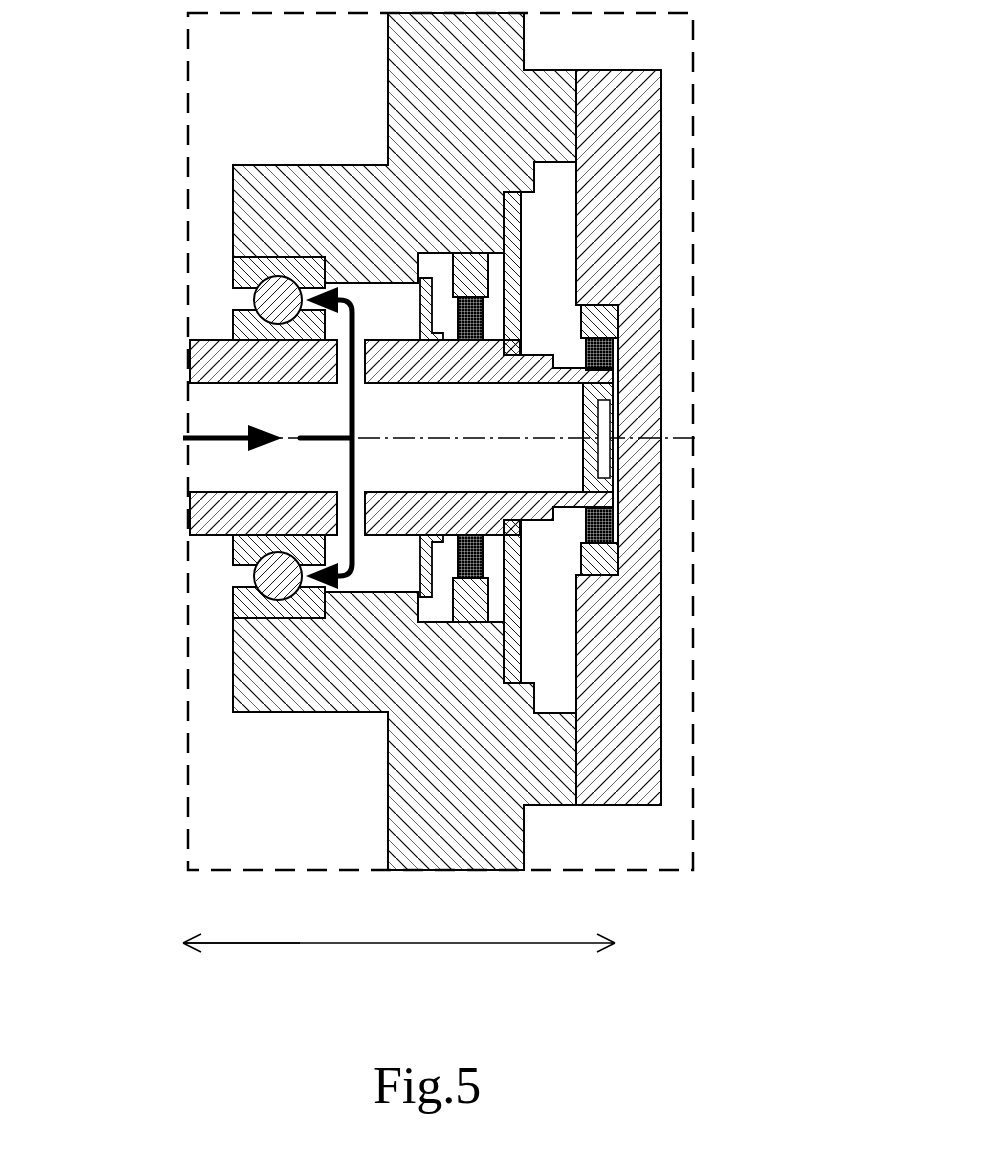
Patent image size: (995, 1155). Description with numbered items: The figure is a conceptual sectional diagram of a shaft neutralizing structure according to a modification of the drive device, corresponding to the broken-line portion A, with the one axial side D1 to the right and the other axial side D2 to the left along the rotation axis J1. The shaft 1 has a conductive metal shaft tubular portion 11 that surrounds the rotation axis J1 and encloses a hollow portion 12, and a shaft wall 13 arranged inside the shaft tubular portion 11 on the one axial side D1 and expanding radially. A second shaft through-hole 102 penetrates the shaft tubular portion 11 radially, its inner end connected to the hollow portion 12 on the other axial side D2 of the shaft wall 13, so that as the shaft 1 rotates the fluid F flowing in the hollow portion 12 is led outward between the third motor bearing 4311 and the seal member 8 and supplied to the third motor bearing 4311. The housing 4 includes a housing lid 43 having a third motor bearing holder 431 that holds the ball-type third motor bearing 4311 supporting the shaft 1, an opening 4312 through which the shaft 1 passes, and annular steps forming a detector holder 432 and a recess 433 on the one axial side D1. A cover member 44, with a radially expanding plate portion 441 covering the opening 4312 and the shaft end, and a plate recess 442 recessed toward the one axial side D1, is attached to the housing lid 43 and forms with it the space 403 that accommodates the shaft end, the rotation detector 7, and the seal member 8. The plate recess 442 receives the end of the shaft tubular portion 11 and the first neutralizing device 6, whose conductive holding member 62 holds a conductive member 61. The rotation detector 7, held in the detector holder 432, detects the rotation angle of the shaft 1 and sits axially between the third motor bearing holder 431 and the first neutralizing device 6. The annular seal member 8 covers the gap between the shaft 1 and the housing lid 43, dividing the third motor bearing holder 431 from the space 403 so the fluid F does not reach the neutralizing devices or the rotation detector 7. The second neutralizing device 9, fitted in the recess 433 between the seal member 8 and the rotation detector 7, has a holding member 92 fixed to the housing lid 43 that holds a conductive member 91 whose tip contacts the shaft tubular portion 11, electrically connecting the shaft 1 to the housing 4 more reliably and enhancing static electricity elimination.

The portion A is at (188, 62).
The rotation axis J1 is at (183, 437).
The fluid F is at (220, 437).
The one axial side D1 is at (435, 947).
The other axial side D2 is at (204, 947).
The shaft 1 is at (429, 444).
The shaft tubular portion 11 is at (218, 512).
The hollow portion 12 is at (204, 482).
The shaft wall 13 is at (622, 420).
The second shaft through-hole 102 is at (318, 372).
The housing 4 is at (447, 441).
The housing lid 43 is at (427, 441).
The third motor bearing holder 431 is at (250, 207).
The third motor bearing 4311 is at (250, 272).
The opening 4312 is at (369, 270).
The detector holder 432 is at (517, 177).
The recess 433 is at (460, 240).
The space 403 is at (570, 657).
The cover member 44 is at (710, 437).
The plate portion 441 is at (617, 742).
The plate recess 442 is at (634, 471).
The first neutralizing device 6 is at (682, 456).
The conductive member 61 is at (610, 530).
The holding member 62 is at (606, 558).
The rotation detector 7 is at (510, 217).
The seal member 8 is at (428, 565).
The second neutralizing device 9 is at (618, 414).
The conductive member 91 is at (472, 317).
The holding member 92 is at (470, 280).